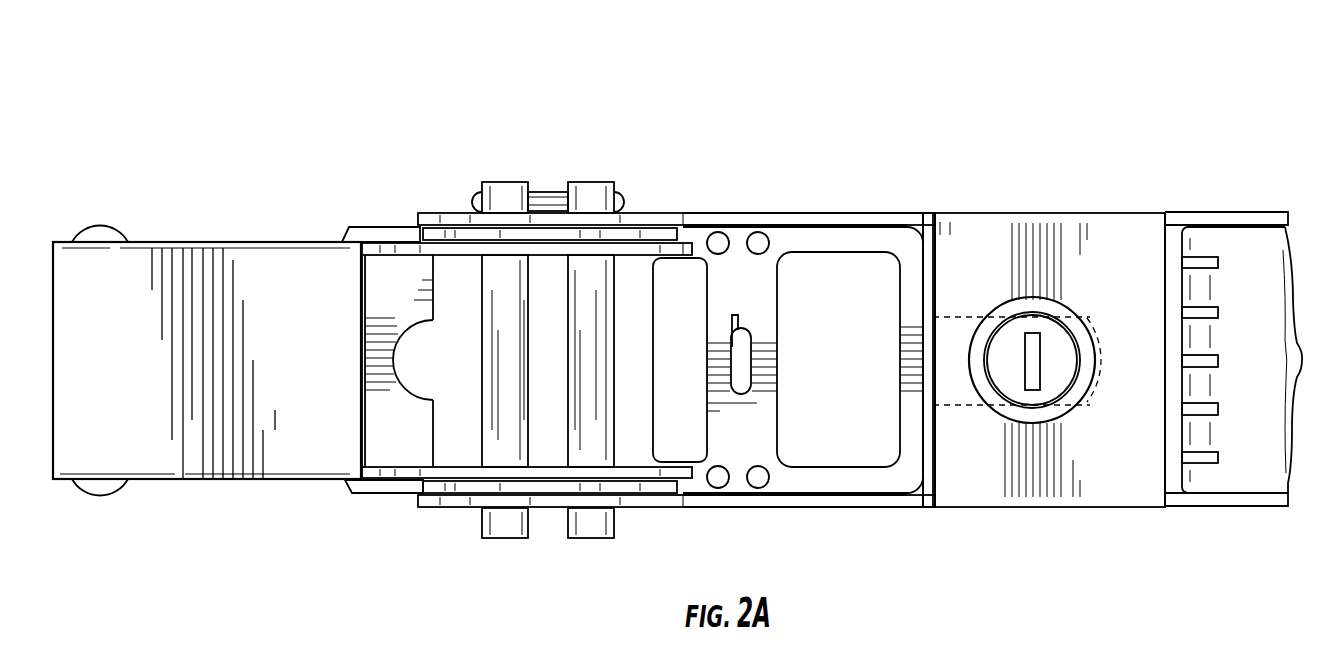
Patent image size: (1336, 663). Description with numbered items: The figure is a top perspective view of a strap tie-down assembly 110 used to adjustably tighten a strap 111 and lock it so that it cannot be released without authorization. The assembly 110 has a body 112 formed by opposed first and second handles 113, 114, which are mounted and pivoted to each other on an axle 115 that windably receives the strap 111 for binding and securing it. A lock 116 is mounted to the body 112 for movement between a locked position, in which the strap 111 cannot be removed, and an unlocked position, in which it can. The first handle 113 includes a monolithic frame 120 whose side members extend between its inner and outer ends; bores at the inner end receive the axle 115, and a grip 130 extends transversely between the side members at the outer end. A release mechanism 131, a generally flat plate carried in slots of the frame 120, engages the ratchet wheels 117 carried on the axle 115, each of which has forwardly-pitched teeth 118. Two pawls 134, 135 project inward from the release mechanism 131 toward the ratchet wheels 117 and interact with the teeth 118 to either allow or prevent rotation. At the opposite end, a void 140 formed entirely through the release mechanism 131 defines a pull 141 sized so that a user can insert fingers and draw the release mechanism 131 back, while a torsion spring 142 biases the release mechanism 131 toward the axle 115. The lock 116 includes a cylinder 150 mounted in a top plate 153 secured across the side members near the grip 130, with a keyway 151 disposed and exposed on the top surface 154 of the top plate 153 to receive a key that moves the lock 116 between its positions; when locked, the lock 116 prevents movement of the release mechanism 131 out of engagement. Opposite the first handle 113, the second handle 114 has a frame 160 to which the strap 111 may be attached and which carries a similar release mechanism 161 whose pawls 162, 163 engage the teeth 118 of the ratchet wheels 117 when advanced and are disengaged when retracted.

The strap tie-down assembly 110 is at (1208, 108).
The strap 111 is at (270, 475).
The body 112 is at (412, 240).
The first handle 113 is at (1207, 508).
The second handle 114 is at (363, 496).
The axle 115 is at (623, 163).
The lock 116 is at (1075, 305).
The ratchet wheels 117 is at (638, 223).
The teeth 118 is at (678, 237).
The frame 120 is at (890, 508).
The grip 130 is at (1290, 480).
The release mechanism 131 is at (923, 467).
The pawl 134 is at (655, 260).
The pawl 135 is at (655, 462).
The void 140 is at (828, 282).
The pull 141 is at (928, 262).
The torsion spring 142 is at (740, 317).
The cylinder 150 is at (1087, 320).
The keyway 151 is at (1043, 372).
The top plate 153 is at (1008, 227).
The top surface 154 is at (998, 290).
The frame 160 is at (368, 227).
The release mechanism 161 is at (437, 305).
The pawl 162 is at (390, 225).
The pawl 163 is at (402, 497).